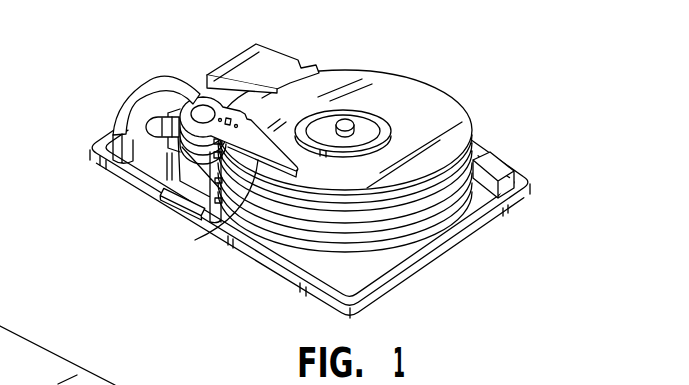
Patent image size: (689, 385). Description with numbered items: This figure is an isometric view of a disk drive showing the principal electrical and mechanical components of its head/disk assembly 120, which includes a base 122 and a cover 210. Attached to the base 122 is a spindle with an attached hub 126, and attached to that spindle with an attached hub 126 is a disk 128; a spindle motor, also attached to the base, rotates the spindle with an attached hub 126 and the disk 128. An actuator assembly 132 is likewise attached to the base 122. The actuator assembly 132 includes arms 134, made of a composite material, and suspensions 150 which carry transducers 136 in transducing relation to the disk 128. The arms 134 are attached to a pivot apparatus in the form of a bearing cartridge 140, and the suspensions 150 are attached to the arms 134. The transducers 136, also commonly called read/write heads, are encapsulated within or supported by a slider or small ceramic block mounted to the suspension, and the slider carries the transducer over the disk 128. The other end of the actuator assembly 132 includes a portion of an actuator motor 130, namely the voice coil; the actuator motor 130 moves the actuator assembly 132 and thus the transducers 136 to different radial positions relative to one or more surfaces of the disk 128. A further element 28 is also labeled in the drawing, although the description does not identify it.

The head/disk assembly 120 is at (286, 164).
The base 122 is at (367, 273).
The spindle with an attached hub 126 is at (352, 125).
The disk 128 is at (452, 118).
The actuator motor 130 is at (143, 83).
The actuator assembly 132 is at (184, 147).
The arms 134 is at (265, 110).
The transducers 136 is at (296, 172).
The bearing cartridge 140 is at (201, 106).
The suspensions 150 is at (214, 236).
The magnet 28 is at (137, 118).
The cover 210 is at (136, 384).